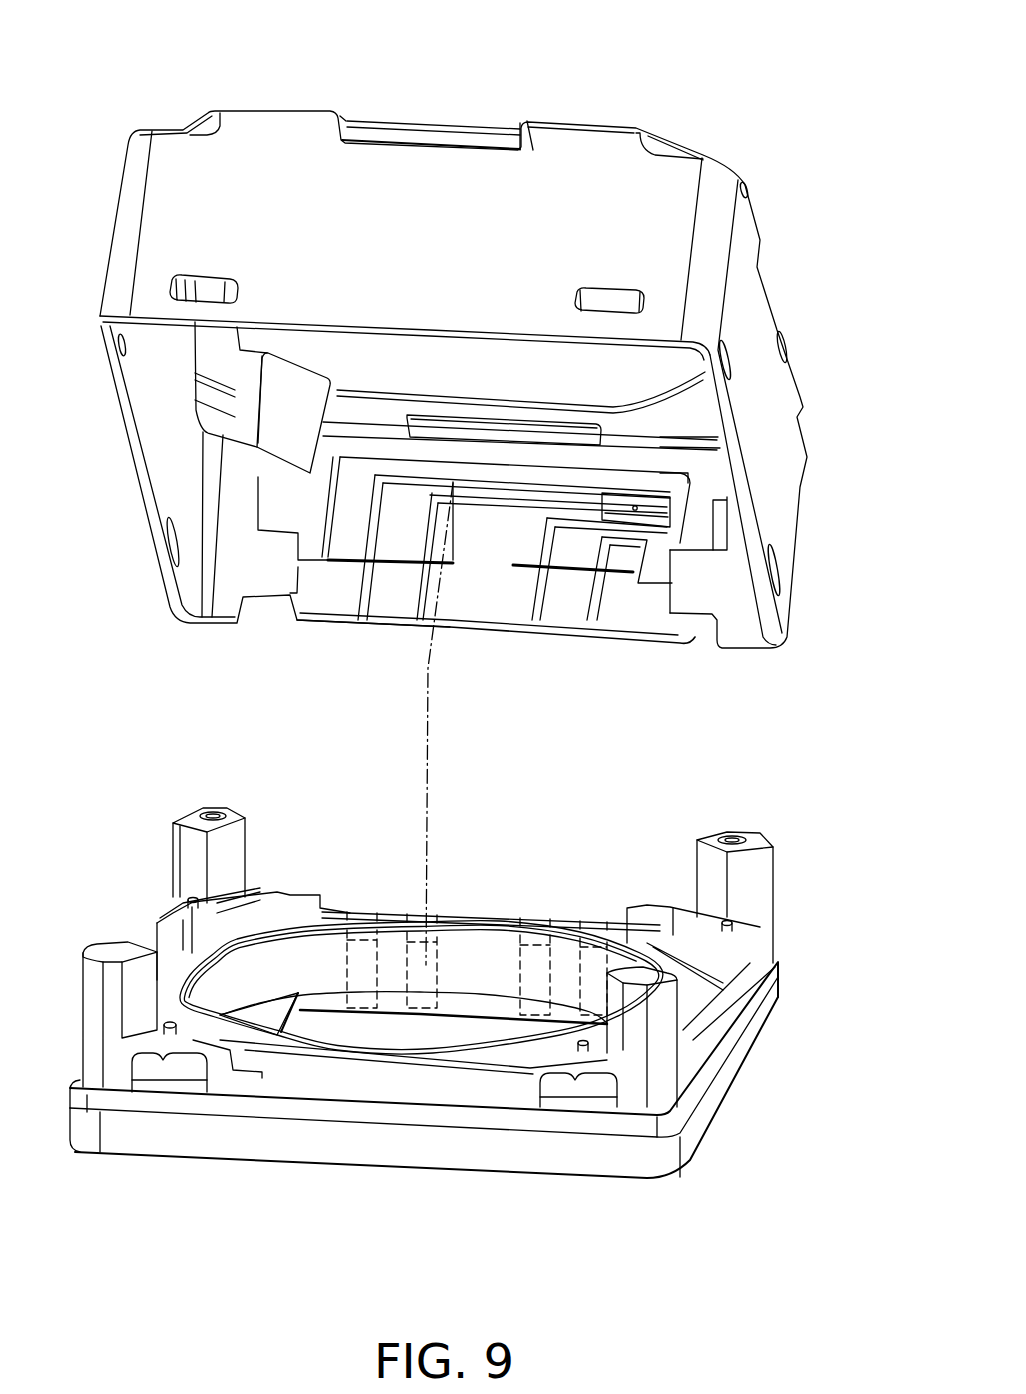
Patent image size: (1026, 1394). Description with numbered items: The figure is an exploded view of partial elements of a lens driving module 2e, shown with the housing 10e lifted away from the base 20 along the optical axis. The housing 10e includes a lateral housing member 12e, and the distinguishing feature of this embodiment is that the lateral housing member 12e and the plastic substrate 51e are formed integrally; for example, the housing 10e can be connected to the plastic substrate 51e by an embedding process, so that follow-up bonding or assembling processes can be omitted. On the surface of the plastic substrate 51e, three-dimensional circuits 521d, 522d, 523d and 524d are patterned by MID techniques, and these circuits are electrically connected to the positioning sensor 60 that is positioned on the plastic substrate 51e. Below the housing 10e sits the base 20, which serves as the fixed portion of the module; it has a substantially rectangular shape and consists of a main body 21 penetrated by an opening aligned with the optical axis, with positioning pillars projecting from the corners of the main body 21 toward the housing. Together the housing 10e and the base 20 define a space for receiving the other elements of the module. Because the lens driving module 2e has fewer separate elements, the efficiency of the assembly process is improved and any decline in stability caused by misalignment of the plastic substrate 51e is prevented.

The lens driving module 2e is at (97, 77).
The housing 10e is at (786, 209).
The lateral housing member 12e is at (235, 573).
The plastic substrate 51e is at (297, 606).
The 3-D circuit 524d is at (365, 627).
The 3-D circuit 523d is at (418, 627).
The 3-D circuit 522d is at (538, 629).
The 3-D circuit 521d is at (594, 631).
The positioning sensor 60 is at (658, 507).
The base 20 is at (787, 811).
The main body 21 is at (157, 948).